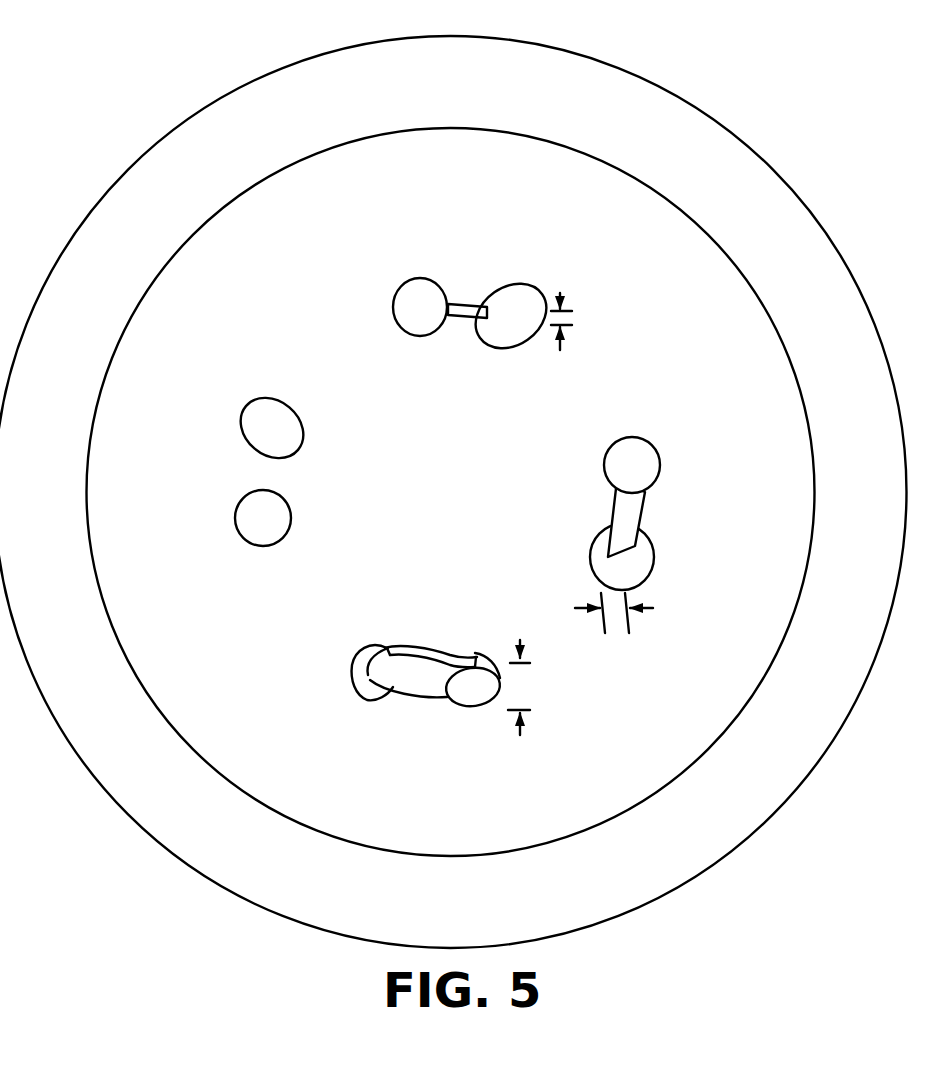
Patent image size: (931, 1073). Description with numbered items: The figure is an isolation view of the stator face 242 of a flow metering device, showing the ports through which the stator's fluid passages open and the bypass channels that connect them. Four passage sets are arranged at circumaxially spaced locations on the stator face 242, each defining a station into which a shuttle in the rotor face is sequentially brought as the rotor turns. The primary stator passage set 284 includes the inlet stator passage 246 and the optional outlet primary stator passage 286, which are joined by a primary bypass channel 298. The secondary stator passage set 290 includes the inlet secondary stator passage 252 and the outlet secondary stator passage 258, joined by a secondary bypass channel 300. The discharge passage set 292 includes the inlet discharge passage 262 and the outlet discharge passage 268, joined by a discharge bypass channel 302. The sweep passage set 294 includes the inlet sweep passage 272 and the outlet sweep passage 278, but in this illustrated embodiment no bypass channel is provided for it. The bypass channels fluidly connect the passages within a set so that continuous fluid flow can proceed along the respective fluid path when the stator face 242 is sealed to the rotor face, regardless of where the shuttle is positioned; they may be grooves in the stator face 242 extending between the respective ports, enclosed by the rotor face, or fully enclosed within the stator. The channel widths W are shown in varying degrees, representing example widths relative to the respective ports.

The stator face 242 is at (252, 185).
The inlet stator passage 246 is at (417, 274).
The inlet secondary stator passage 252 is at (697, 463).
The outlet secondary stator passage 258 is at (657, 563).
The inlet discharge passage 262 is at (480, 653).
The outlet discharge passage 268 is at (379, 642).
The inlet sweep passage 272 is at (294, 532).
The outlet sweep passage 278 is at (304, 416).
The primary stator passage set 284 is at (492, 320).
The outlet primary stator passage 286 is at (524, 280).
The secondary stator passage set 290 is at (595, 535).
The discharge passage set 292 is at (432, 650).
The sweep passage set 294 is at (316, 475).
The primary bypass channel 298 is at (470, 303).
The secondary bypass channel 300 is at (640, 525).
The discharge bypass channel 302 is at (414, 698).